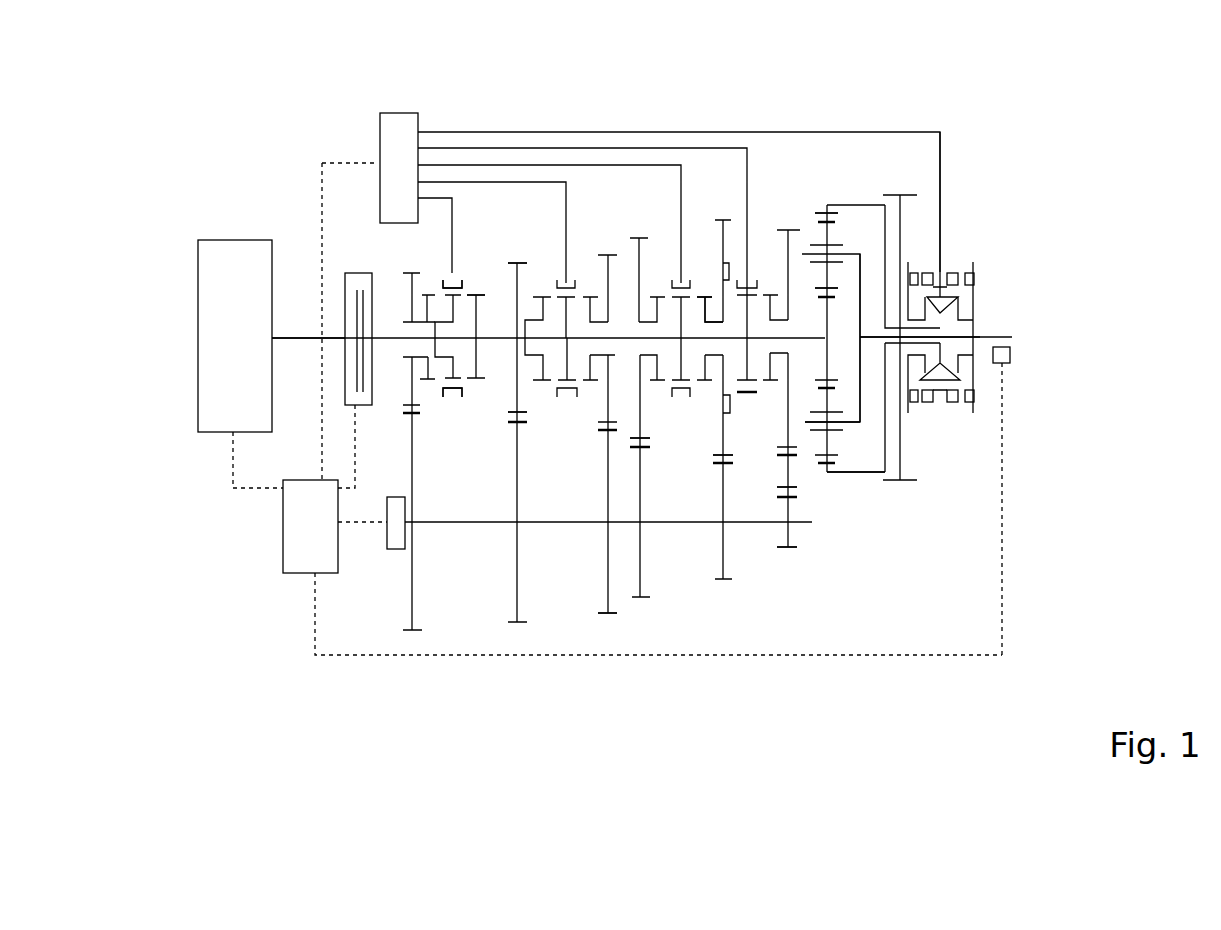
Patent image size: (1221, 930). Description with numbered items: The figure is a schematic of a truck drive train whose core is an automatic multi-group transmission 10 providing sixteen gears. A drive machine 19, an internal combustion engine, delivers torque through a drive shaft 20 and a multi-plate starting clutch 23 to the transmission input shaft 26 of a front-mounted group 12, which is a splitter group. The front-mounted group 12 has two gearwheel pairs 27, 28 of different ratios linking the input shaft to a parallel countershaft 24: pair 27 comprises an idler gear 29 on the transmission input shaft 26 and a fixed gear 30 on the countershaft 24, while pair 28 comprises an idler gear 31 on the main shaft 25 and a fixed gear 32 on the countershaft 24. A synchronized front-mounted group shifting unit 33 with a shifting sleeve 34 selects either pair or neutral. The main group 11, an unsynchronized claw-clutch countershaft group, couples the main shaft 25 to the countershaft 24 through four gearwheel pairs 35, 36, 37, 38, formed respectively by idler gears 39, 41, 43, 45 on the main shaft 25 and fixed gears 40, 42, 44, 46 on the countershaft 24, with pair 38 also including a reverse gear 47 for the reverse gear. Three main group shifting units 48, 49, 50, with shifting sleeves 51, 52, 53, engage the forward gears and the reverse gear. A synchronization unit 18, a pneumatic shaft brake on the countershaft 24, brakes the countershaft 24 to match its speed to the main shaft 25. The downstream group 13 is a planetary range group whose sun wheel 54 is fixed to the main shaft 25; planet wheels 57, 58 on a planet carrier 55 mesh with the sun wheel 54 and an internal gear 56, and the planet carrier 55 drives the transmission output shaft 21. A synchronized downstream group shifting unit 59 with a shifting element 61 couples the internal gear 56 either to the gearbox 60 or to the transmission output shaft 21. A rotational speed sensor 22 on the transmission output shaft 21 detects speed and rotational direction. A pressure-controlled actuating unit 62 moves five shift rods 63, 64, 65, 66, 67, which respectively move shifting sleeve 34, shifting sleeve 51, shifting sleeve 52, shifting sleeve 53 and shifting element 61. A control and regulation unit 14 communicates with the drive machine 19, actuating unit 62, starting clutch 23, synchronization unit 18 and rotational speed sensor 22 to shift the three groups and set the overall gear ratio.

The multi-group transmission 10 is at (978, 160).
The main group 11 is at (768, 170).
The front-mounted group 12 is at (577, 250).
The downstream group 13 is at (832, 173).
The control and regulation unit 14 is at (283, 520).
The synchronization unit 18 is at (388, 535).
The drive machine 19 is at (257, 265).
The drive shaft 20 is at (313, 338).
The transmission output shaft 21 is at (983, 337).
The rotational speed sensor 22 is at (1010, 347).
The starting clutch 23 is at (335, 328).
The countershaft 24 is at (827, 480).
The main shaft 25 is at (640, 243).
The transmission input shaft 26 is at (347, 275).
The gearwheel pair 27 is at (413, 640).
The gearwheel pair 28 is at (517, 634).
The idler gear 29 is at (410, 287).
The fixed gear 30 is at (413, 573).
The idler gear 31 is at (591, 292).
The fixed gear 32 is at (517, 573).
The front-mounted group shifting unit 33 is at (476, 292).
The shifting sleeve 34 is at (447, 400).
The gearwheel pair 35 is at (608, 624).
The gearwheel pair 36 is at (637, 604).
The gearwheel pair 37 is at (724, 592).
The gearwheel pair 38 is at (787, 565).
The idler gear 39 is at (607, 258).
The fixed gear 40 is at (608, 560).
The idler gear 41 is at (659, 292).
The fixed gear 42 is at (640, 573).
The idler gear 43 is at (733, 253).
The fixed gear 44 is at (723, 547).
The idler gear 45 is at (793, 233).
The fixed gear 46 is at (790, 528).
The reverse gear 47 is at (792, 477).
The main group shifting unit 48 is at (625, 338).
The main group shifting unit 49 is at (673, 253).
The main group shifting unit 50 is at (724, 220).
The shifting sleeve 51 is at (557, 390).
The shifting sleeve 52 is at (679, 397).
The shifting sleeve 53 is at (748, 397).
The sun wheel 54 is at (840, 310).
The planet carrier 55 is at (862, 402).
The internal gear 56 is at (855, 472).
The planet wheel 57 is at (832, 232).
The planet wheel 58 is at (830, 437).
The downstream group shifting unit 59 is at (967, 252).
The gearbox 60 is at (903, 183).
The shifting element 61 is at (947, 403).
The actuating unit 62 is at (393, 150).
The shift rod 63 is at (463, 265).
The shift rod 64 is at (456, 288).
The shift rod 65 is at (483, 292).
The shift rod 66 is at (540, 290).
The shift rod 67 is at (513, 232).